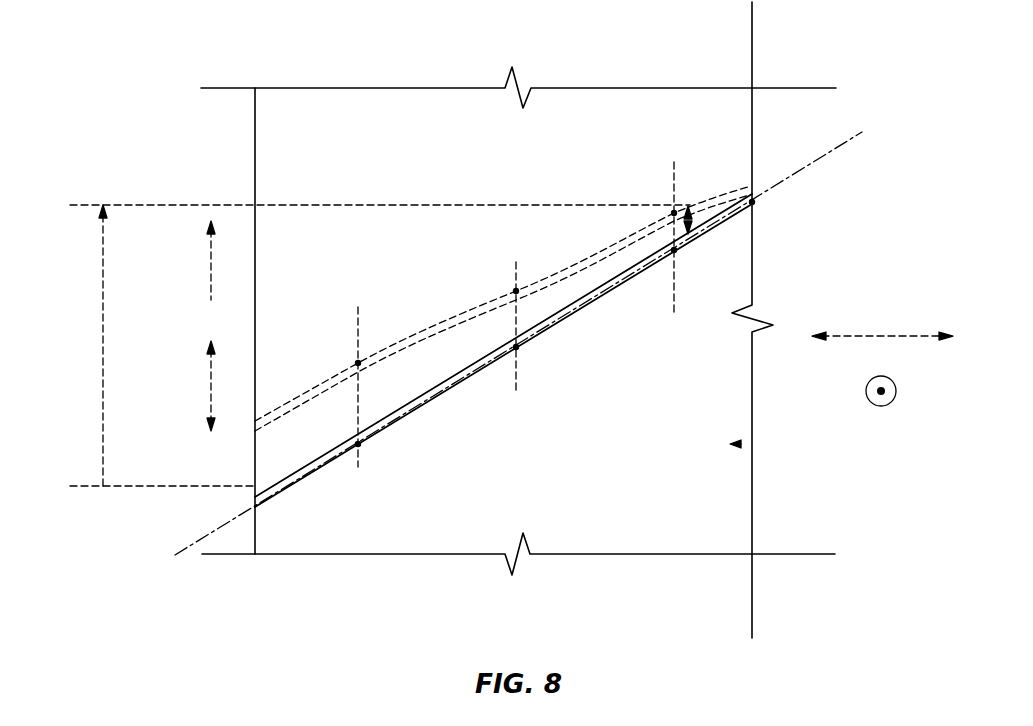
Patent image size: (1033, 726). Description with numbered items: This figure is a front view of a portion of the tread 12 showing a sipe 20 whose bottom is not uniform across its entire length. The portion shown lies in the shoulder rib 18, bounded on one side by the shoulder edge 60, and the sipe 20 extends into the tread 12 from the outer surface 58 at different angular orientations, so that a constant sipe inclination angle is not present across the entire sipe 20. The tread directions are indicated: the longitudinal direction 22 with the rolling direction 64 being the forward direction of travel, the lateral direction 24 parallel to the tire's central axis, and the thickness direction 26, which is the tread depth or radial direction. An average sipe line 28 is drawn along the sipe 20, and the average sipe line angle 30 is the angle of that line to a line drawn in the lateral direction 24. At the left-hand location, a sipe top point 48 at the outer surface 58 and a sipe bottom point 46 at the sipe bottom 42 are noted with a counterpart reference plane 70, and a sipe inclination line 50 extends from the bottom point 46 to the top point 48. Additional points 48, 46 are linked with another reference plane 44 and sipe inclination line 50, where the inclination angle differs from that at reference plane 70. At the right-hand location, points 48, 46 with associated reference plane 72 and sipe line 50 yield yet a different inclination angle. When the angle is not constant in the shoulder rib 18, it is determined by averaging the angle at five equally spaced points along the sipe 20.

The tread 12 is at (255, 152).
The shoulder rib 18 is at (742, 518).
The sipe 20 is at (459, 390).
The longitudinal direction 22 is at (211, 385).
The lateral direction 24 is at (880, 336).
The thickness direction 26 is at (882, 406).
The average sipe line 28 is at (803, 172).
The average sipe line angle 30 is at (690, 220).
The sipe bottom 42 is at (583, 248).
The reference plane 44 is at (517, 313).
The sipe bottom point 46 is at (358, 363).
The sipe top point 48 is at (358, 444).
The sipe inclination line 50 is at (516, 305).
The outer surface 58 is at (740, 444).
The shoulder edge 60 is at (254, 537).
The rolling direction 64 is at (211, 262).
The reference plane 70 is at (358, 413).
The reference plane 72 is at (673, 241).